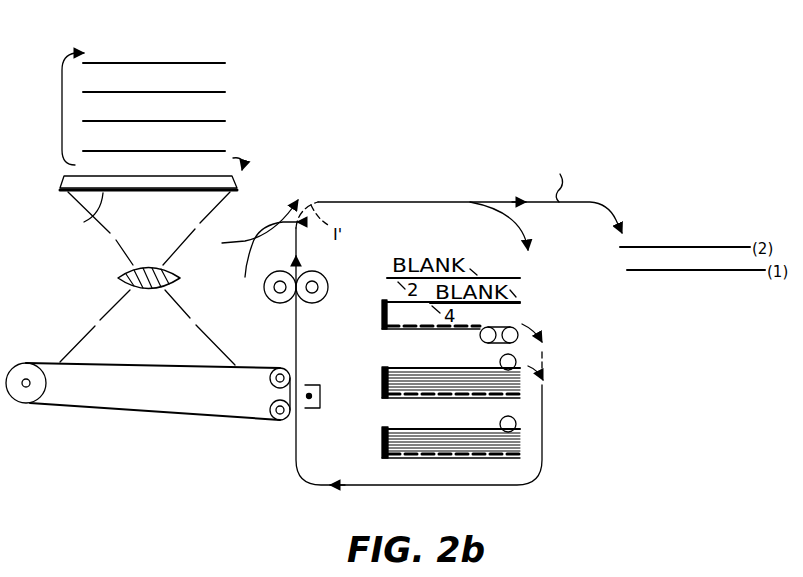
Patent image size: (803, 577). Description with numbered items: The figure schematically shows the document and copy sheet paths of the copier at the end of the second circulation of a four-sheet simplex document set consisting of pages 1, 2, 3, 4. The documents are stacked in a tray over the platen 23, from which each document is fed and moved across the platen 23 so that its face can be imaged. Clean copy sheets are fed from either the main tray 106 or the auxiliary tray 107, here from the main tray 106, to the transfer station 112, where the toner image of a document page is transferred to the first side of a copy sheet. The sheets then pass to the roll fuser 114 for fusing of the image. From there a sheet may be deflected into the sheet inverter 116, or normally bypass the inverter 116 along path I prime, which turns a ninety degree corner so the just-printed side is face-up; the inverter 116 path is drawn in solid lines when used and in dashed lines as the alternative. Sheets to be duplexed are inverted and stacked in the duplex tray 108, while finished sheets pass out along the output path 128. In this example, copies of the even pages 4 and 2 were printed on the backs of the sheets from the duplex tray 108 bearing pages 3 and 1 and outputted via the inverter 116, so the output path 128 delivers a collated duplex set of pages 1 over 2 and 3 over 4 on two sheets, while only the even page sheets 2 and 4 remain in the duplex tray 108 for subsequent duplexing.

The page 1 is at (102, 63).
The page 2 is at (112, 92).
The page 3 is at (132, 121).
The page 4 is at (153, 151).
The platen 23 is at (148, 270).
The sheet inverter 116 is at (246, 228).
The roll fuser 114 is at (322, 275).
The output path 128 is at (553, 178).
The duplex tray 108 is at (380, 321).
The transfer station 112 is at (320, 386).
The main tray 106 is at (383, 380).
The auxiliary tray 107 is at (385, 442).